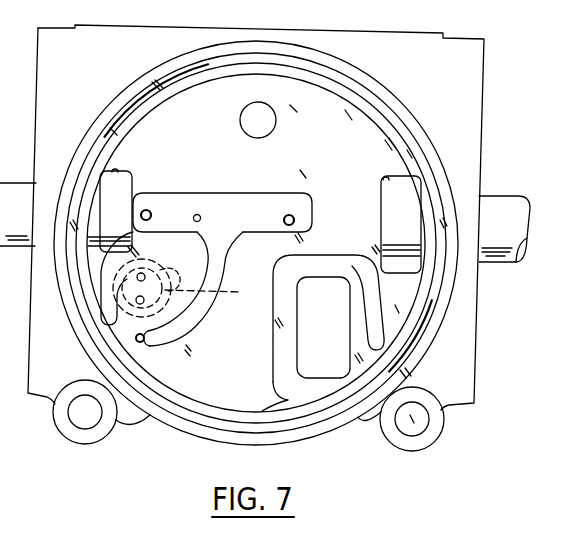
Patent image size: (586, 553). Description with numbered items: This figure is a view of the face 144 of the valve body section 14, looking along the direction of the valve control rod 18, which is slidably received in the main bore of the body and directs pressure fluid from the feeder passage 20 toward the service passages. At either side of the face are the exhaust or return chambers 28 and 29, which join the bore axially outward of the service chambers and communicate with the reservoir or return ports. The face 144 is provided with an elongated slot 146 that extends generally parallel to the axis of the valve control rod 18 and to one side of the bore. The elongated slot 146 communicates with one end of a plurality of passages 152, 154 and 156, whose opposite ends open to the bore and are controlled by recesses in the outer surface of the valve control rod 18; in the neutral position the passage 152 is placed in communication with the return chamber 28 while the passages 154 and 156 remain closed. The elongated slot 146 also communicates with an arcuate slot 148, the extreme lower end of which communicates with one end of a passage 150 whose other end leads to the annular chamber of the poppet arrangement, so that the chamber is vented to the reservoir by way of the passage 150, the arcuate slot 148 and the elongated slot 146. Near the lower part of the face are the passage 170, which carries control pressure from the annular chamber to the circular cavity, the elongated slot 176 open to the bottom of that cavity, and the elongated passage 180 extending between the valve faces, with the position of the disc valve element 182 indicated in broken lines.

The valve body section 14 is at (474, 141).
The valve control rod 18 is at (504, 197).
The feeder passage 20 is at (337, 335).
The return chamber 28 is at (122, 170).
The return chamber 29 is at (386, 180).
The face 144 is at (309, 262).
The elongated slot 146 is at (238, 218).
The arcuate slot 148 is at (192, 320).
The passage 150 is at (144, 342).
The passage 152 is at (149, 211).
The passage 154 is at (198, 214).
The passage 156 is at (292, 214).
The passage 170 is at (137, 303).
The elongated slot 176 is at (167, 268).
The elongated passage 180 is at (137, 279).
The disc valve element 182 is at (216, 294).